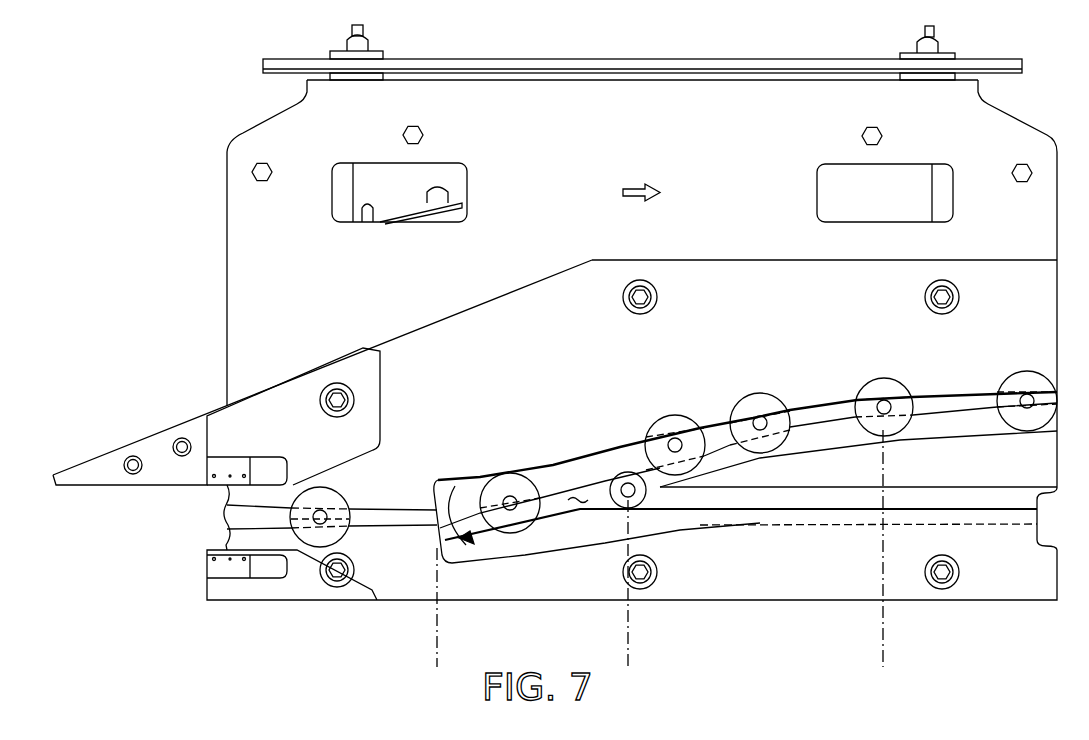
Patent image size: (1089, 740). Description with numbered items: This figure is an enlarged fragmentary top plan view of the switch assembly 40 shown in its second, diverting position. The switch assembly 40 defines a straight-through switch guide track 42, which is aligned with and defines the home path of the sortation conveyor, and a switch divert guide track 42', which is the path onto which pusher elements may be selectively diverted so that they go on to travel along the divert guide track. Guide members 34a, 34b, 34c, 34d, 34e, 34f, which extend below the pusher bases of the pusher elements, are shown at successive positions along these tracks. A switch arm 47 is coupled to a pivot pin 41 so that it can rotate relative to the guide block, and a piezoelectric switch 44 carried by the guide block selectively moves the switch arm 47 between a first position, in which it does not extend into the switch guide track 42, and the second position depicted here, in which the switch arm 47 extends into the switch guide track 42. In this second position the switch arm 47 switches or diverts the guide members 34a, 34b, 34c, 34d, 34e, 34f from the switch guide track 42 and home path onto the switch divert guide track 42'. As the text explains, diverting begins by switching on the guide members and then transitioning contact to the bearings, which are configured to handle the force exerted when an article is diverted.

The switch assembly 40 is at (155, 157).
The switch guide track 42 is at (615, 500).
The switch divert guide track 42' is at (674, 443).
The piezoelectric switch 44 is at (583, 510).
The switch arm 47 is at (577, 495).
The pivot pin 41 is at (622, 473).
The guide member 34a is at (322, 512).
The guide member 34b is at (509, 496).
The guide member 34c is at (675, 438).
The guide member 34d is at (760, 416).
The guide member 34e is at (884, 400).
The guide member 34f is at (1027, 394).